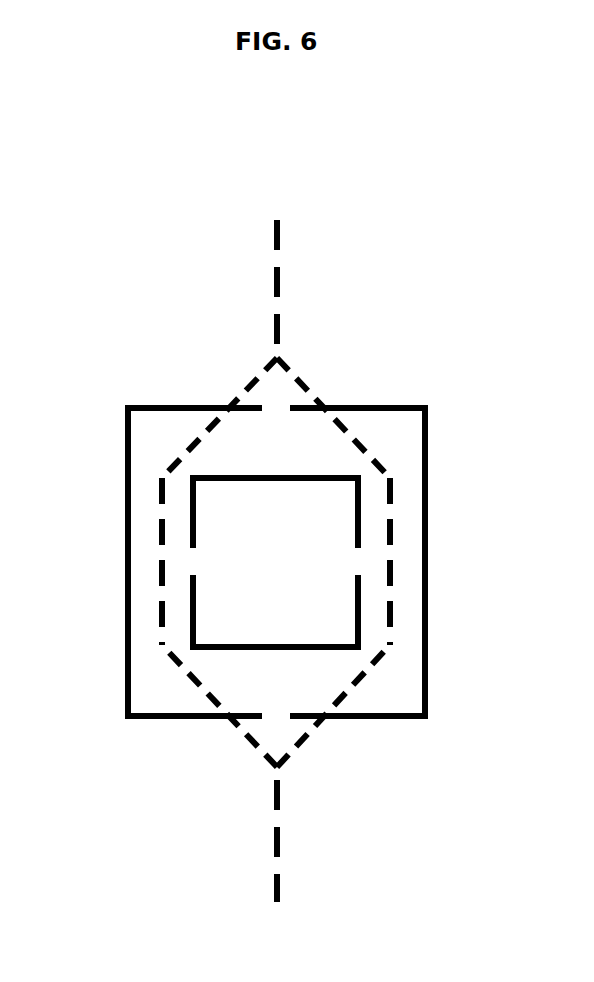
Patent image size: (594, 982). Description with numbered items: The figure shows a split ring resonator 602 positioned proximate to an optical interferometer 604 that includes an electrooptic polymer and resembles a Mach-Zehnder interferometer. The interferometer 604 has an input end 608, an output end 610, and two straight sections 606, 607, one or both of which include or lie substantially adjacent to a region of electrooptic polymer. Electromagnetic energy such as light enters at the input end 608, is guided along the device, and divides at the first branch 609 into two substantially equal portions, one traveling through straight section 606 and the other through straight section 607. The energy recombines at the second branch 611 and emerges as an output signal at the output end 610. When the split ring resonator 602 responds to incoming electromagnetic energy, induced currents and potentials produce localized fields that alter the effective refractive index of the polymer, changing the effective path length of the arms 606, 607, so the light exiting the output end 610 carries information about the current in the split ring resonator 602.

The split ring resonator 602 is at (427, 487).
The optical interferometer 604 is at (305, 736).
The straight section 606 is at (393, 536).
The straight section 607 is at (158, 545).
The input end 608 is at (281, 229).
The first branch 609 is at (280, 360).
The output end 610 is at (280, 879).
The second branch 611 is at (274, 771).